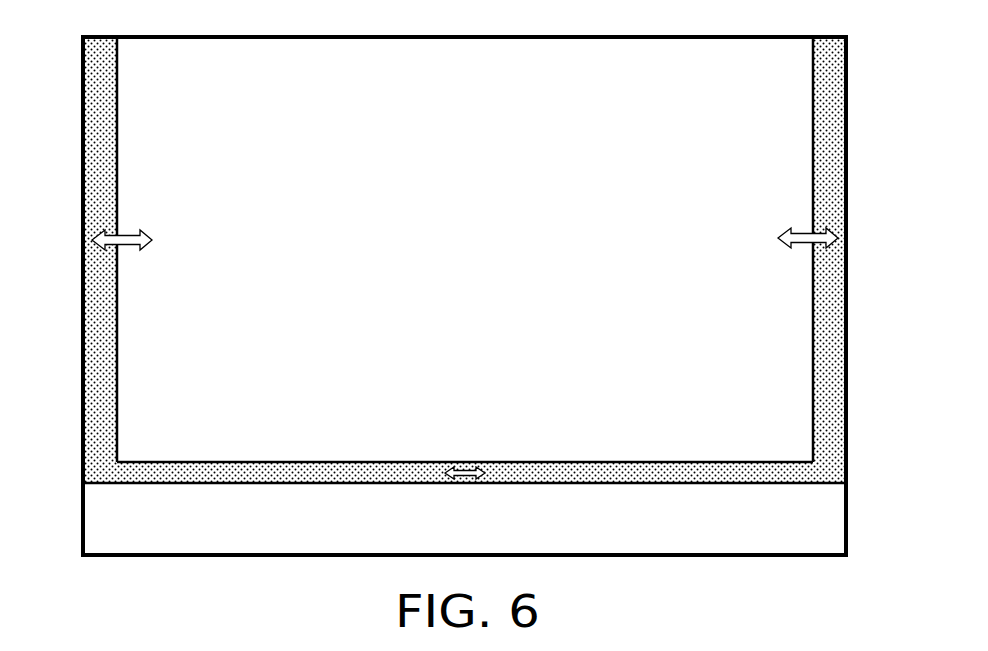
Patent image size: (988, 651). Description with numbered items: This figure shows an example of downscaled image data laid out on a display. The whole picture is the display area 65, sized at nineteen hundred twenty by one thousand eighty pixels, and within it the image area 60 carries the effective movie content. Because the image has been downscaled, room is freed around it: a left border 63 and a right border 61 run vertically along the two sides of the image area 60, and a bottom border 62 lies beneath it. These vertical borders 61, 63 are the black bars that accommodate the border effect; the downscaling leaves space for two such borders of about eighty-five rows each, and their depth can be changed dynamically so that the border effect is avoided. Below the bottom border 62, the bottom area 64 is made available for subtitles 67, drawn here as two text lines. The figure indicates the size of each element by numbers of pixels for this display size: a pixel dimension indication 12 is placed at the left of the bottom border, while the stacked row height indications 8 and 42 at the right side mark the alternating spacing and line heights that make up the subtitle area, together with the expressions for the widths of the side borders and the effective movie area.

The image area 60 is at (202, 86).
The right border 61 is at (847, 358).
The bottom border 62 is at (593, 483).
The left border 63 is at (83, 338).
The bottom area 64 is at (811, 543).
The display area 65 is at (847, 117).
The subtitles 67 is at (263, 545).
The bar height dimension 12 is at (82, 473).
The line spacing dimension 8 is at (862, 518).
The subtitle line height dimension 42 is at (868, 519).